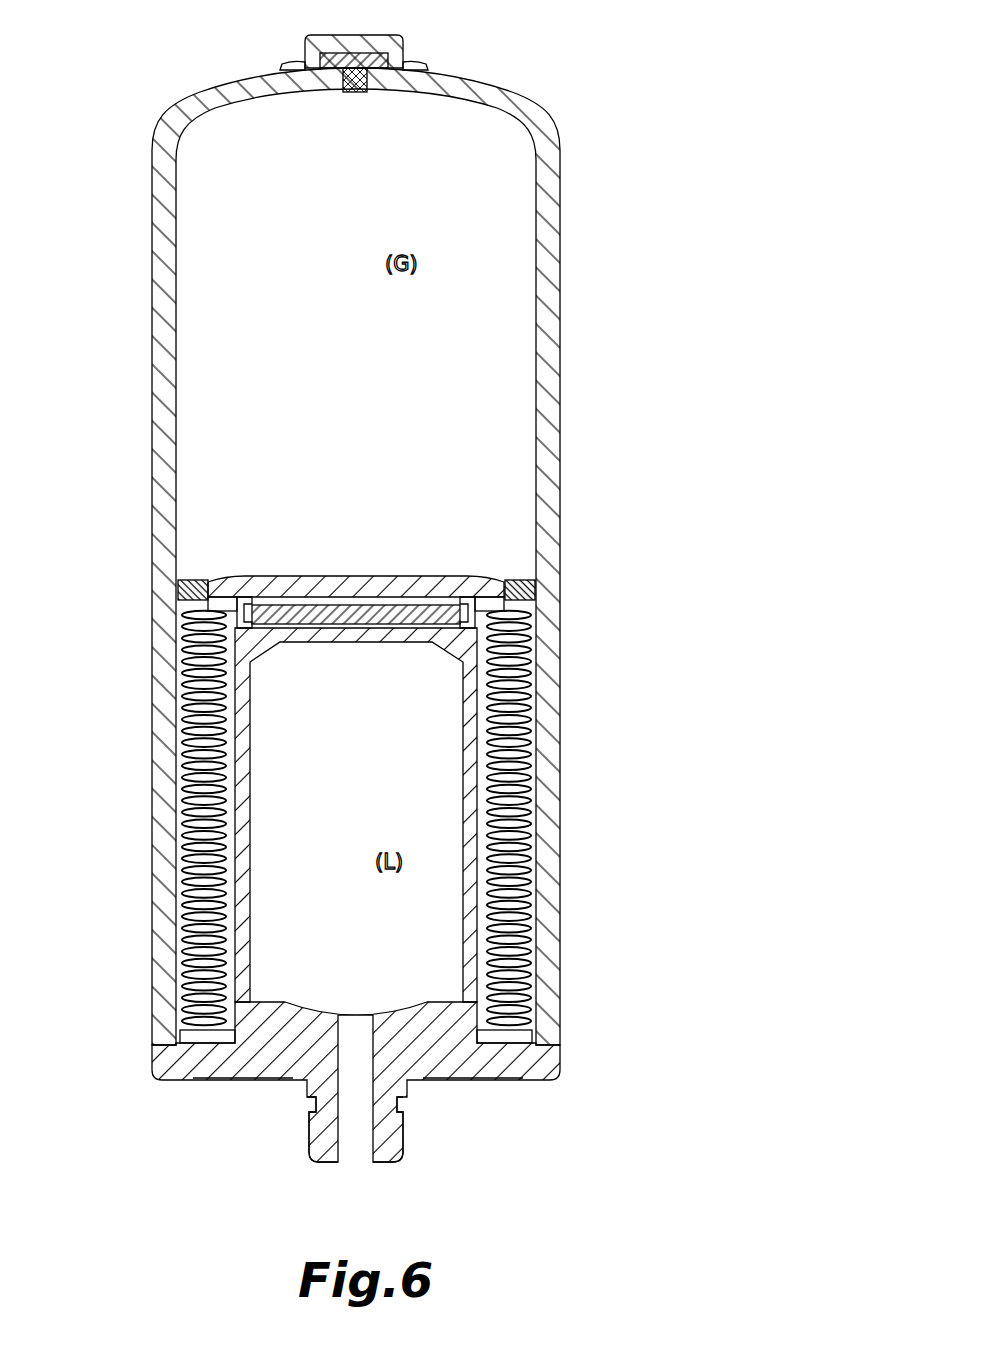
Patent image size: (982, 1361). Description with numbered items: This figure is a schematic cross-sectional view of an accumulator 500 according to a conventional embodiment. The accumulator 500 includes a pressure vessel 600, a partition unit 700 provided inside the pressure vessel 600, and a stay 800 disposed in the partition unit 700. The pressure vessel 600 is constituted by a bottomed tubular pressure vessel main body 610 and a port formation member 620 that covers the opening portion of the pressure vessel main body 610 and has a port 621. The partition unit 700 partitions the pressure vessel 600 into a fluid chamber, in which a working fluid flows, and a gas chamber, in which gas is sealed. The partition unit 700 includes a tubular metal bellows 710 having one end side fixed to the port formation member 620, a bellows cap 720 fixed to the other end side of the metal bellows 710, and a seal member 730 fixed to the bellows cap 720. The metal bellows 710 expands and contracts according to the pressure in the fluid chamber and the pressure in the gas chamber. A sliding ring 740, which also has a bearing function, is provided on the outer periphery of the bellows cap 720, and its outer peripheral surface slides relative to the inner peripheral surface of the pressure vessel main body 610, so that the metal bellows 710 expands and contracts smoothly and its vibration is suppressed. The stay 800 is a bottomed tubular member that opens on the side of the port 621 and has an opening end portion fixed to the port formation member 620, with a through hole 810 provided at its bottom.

The accumulator 500 is at (384, 587).
The pressure vessel 600 is at (418, 599).
The pressure vessel main body 610 is at (546, 346).
The port formation member 620 is at (356, 1082).
The port 621 is at (372, 1115).
The partition unit 700 is at (360, 542).
The metal bellows 710 is at (518, 814).
The bellows cap 720 is at (418, 587).
The seal member 730 is at (292, 600).
The sliding ring 740 is at (518, 582).
The stay 800 is at (370, 827).
The through hole 810 is at (345, 648).